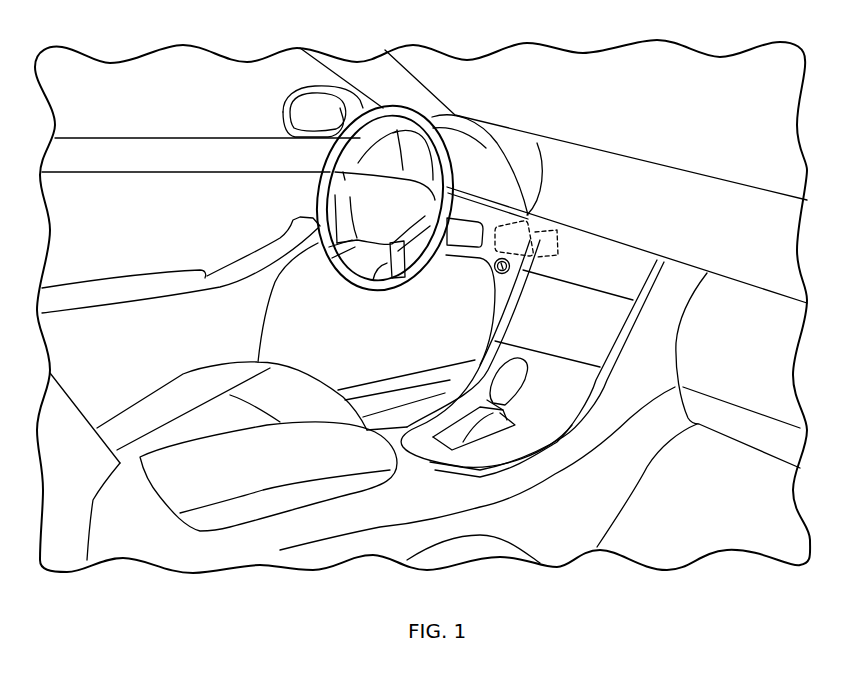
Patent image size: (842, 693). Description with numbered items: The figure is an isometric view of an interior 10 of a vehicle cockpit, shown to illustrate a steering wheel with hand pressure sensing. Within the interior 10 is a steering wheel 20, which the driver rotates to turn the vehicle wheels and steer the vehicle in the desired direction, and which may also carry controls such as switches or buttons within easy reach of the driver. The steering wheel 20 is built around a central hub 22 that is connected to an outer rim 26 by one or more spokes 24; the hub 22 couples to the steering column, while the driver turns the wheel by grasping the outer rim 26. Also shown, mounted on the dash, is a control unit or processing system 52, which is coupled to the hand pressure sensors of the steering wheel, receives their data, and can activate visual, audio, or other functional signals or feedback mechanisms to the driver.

The interior 10 is at (590, 83).
The steering wheel 20 is at (332, 305).
The central hub 22 is at (363, 190).
The spoke 24 is at (393, 262).
The outer rim 26 is at (420, 263).
The control unit or processing system 52 is at (563, 240).